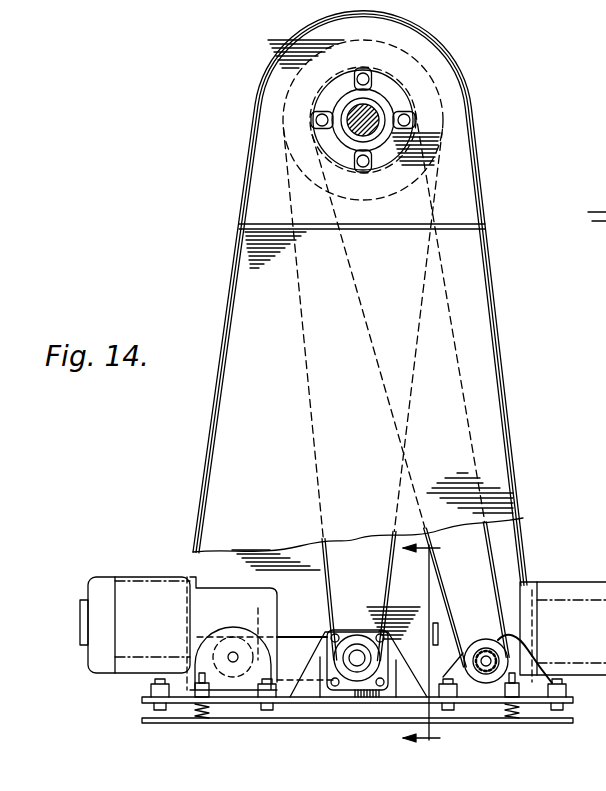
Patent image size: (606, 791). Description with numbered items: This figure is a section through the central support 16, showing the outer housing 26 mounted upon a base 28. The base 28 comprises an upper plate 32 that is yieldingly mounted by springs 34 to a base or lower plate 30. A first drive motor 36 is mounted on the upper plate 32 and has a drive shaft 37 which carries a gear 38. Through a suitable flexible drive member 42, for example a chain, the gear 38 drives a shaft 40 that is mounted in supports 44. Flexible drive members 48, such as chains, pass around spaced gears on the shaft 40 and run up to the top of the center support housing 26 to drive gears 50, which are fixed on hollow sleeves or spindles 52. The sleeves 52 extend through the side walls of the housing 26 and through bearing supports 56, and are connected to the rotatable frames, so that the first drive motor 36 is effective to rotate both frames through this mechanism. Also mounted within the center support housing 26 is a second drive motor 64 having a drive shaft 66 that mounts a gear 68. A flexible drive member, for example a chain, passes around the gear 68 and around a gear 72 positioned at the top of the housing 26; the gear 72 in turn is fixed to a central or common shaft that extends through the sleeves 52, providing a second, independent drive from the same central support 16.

The central support 16 is at (222, 133).
The outer housing 26 is at (500, 297).
The base 28 is at (136, 716).
The lower plate 30 is at (300, 724).
The upper plate 32 is at (142, 699).
The springs 34 is at (205, 720).
The first drive motor 36 is at (152, 577).
The drive shaft 37 is at (230, 652).
The gear 38 is at (262, 626).
The shaft 40 is at (353, 652).
The flexible drive member 42 is at (303, 637).
The supports 44 is at (405, 693).
The flexible drive members 48 is at (327, 564).
The gears 50 is at (445, 107).
The hollow sleeves or spindles 52 is at (382, 107).
The bearing supports 56 is at (390, 82).
The second drive motor 64 is at (588, 580).
The drive shaft 66 is at (487, 650).
The gear 68 is at (507, 646).
The gear 72 is at (280, 83).